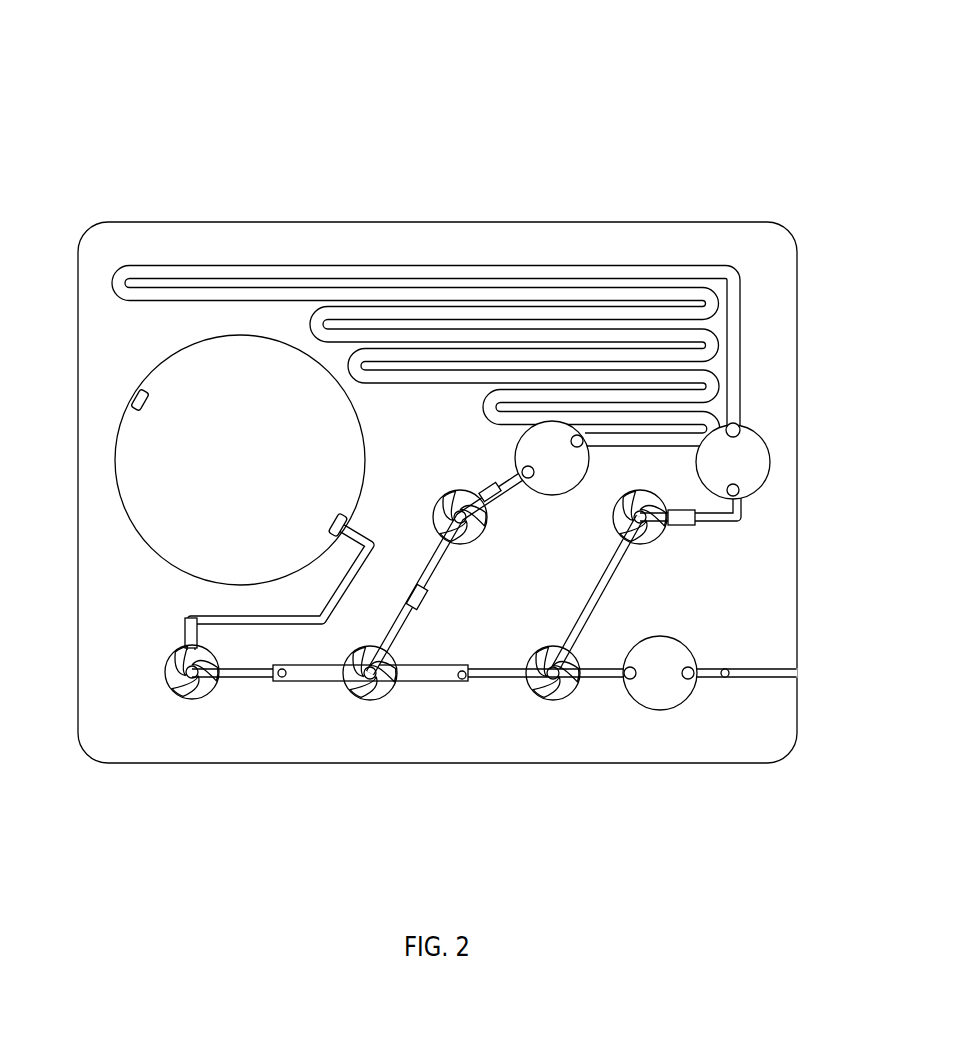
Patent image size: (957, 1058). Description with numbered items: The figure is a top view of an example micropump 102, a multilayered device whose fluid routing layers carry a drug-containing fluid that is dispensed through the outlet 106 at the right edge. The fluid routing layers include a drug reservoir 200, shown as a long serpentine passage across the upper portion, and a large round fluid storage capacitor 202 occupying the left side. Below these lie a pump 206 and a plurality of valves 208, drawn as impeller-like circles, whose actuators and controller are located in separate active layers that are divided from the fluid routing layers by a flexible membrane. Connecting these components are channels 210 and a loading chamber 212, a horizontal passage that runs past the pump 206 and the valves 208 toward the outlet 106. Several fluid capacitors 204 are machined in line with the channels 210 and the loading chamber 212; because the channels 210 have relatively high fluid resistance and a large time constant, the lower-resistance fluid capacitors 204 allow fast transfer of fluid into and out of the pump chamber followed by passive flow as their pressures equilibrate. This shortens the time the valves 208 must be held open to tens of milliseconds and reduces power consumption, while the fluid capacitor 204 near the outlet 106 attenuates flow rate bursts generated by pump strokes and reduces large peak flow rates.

The micropump 102 is at (822, 98).
The outlet 106 is at (797, 672).
The drug reservoir 200 is at (632, 268).
The fluid storage capacitor 202 is at (219, 480).
The fluid capacitors 204 is at (534, 468).
The pump 206 is at (347, 703).
The valves 208 is at (488, 517).
The channels 210 is at (580, 614).
The loading chamber 212 is at (495, 678).